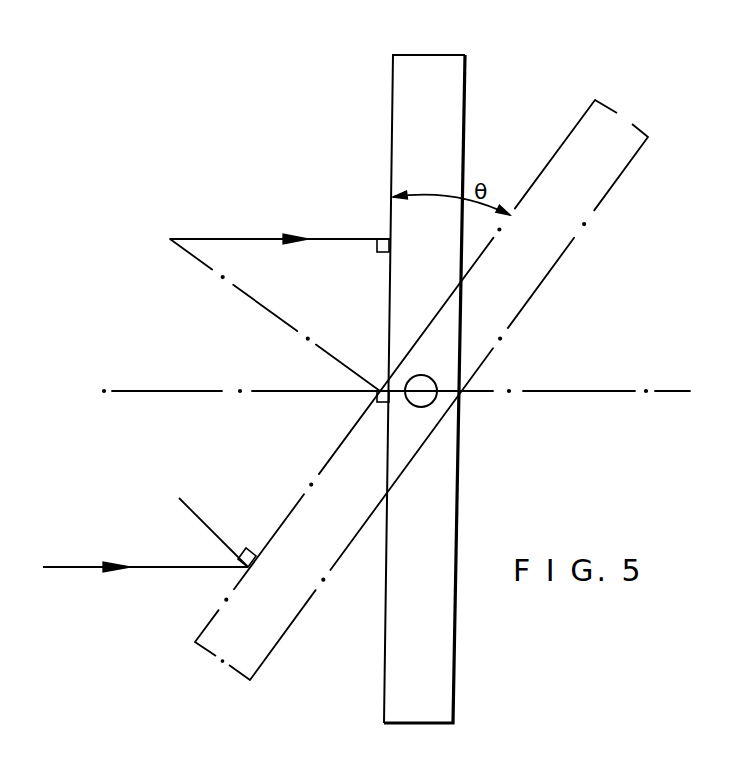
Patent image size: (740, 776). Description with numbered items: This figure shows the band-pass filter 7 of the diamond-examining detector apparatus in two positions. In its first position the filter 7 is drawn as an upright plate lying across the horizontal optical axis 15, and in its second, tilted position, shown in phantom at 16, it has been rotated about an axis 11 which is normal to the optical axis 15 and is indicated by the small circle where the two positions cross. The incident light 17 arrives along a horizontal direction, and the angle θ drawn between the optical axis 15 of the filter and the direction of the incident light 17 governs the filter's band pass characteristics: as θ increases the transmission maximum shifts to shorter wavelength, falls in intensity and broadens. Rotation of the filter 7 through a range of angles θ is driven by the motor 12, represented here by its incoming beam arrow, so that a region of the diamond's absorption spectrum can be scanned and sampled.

The filter 7 is at (435, 66).
The tilted position 16 is at (613, 141).
The axis 11 is at (428, 399).
The optical axis 15 is at (396, 381).
The incident light 17 is at (280, 301).
The motor 12 is at (147, 547).